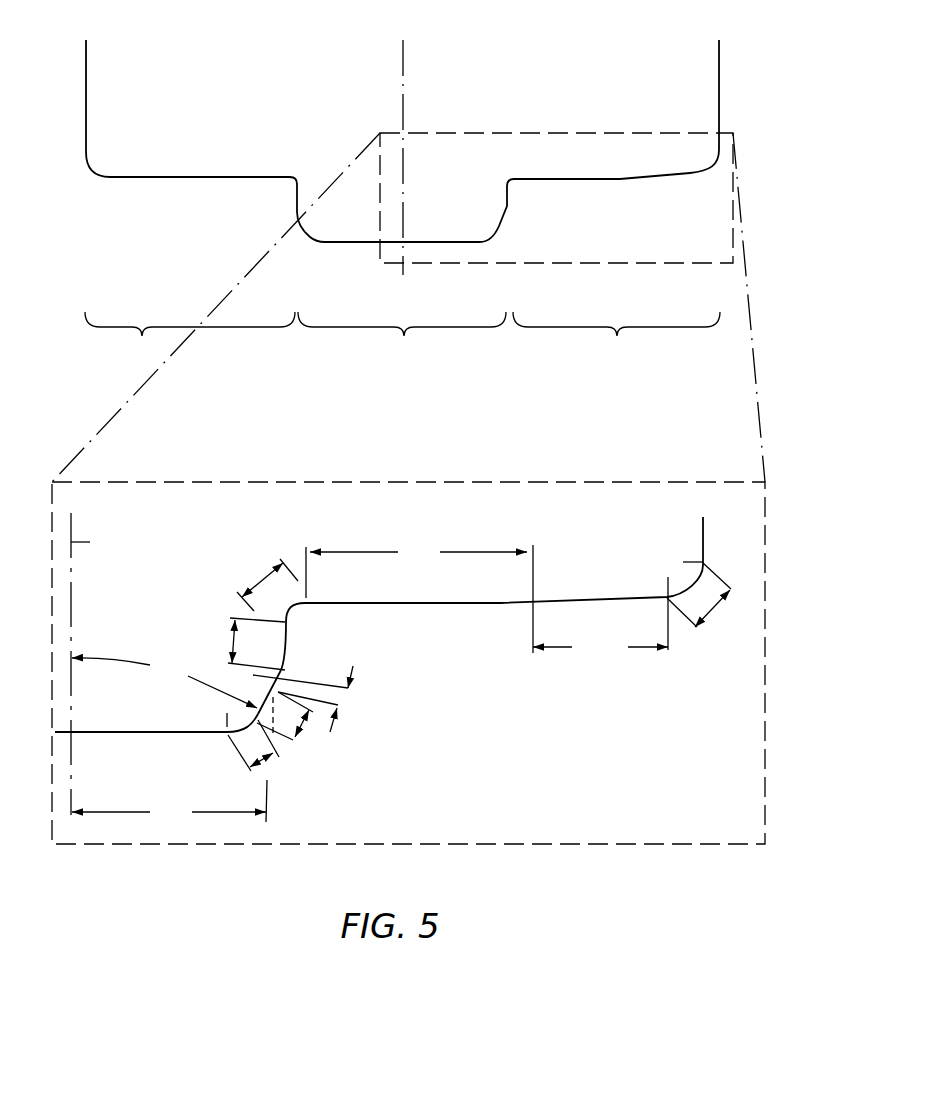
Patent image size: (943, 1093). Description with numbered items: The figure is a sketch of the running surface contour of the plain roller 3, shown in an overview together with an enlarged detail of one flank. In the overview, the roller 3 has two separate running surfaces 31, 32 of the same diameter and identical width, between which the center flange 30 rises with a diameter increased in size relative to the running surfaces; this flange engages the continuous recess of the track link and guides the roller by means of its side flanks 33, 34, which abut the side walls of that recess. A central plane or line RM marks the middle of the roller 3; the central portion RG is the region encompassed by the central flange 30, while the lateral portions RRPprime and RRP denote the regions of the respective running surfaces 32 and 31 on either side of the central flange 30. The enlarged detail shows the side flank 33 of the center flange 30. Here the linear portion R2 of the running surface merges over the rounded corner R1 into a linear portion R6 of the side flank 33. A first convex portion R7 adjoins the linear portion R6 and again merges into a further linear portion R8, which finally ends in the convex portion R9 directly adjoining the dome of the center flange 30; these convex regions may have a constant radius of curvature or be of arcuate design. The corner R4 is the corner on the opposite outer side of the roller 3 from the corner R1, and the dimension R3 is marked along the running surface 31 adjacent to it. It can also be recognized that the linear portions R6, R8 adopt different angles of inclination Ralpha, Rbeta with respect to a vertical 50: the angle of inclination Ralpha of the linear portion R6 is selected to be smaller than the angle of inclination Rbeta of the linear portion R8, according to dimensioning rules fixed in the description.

The plain roller 3 is at (579, 77).
The center flange 30 is at (445, 217).
The running surface 31 is at (615, 180).
The running surface 32 is at (180, 177).
The side flank 33 is at (511, 207).
The side flank 34 is at (296, 206).
The vertical 50 is at (93, 545).
The rounded corner R1 is at (262, 580).
The linear portion of the running surface R2 is at (419, 596).
The dimension R3 is at (600, 618).
The corner R4 is at (715, 612).
The linear portion of the side flank R6 is at (233, 642).
The first convex portion R7 is at (356, 666).
The linear portion R8 is at (307, 725).
The convex portion R9 is at (263, 762).
The central plane RM is at (410, 26).
The central portion RG is at (407, 355).
The lateral portion RRP is at (615, 355).
The lateral portion RRPprime is at (140, 355).
The angle of inclination Ralpha is at (169, 806).
The angle of inclination Rbeta is at (164, 683).